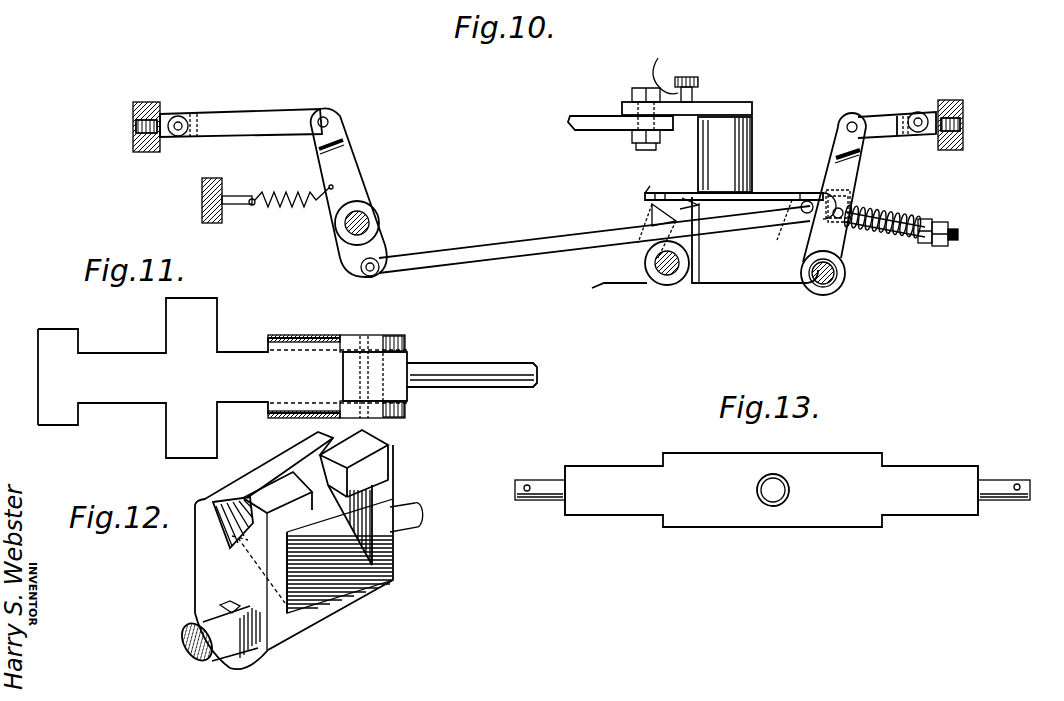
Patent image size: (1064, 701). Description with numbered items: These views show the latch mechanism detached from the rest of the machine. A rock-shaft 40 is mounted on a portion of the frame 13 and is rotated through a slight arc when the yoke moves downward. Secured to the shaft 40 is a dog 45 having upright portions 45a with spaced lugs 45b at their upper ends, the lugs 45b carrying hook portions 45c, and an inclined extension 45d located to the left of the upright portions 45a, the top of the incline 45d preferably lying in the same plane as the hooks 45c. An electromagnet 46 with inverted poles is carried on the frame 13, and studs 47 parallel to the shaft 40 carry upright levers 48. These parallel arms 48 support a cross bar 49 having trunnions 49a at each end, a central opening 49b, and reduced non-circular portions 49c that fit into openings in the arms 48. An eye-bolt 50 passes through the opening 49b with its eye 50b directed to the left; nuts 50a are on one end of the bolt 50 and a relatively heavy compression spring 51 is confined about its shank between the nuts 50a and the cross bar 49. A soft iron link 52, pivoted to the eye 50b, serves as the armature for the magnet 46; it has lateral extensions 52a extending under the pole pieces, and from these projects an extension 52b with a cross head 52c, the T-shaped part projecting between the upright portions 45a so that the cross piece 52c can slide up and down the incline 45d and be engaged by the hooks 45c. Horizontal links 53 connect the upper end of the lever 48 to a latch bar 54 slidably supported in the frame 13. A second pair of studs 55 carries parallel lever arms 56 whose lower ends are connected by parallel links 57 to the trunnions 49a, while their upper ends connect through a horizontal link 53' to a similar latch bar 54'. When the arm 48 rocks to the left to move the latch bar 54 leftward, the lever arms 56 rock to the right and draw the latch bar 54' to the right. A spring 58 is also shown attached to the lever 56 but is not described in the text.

In FIG. 10, the frame 13 is at (592, 288).
In FIG. 10, the rock-shaft 40 is at (667, 270).
In FIG. 12, the rock-shaft 40 is at (188, 642).
In FIG. 10, the dog 45 is at (679, 276).
In FIG. 12, the dog 45 is at (338, 610).
In FIG. 12, the upright portions 45a is at (383, 500).
In FIG. 10, the lugs 45b is at (702, 206).
In FIG. 12, the lugs 45b is at (283, 483).
In FIG. 12, the hook portions 45c is at (228, 505).
In FIG. 10, the inclined extension 45d is at (650, 218).
In FIG. 12, the inclined extension 45d is at (238, 527).
In FIG. 10, the electromagnet 46 is at (742, 140).
In FIG. 10, the studs 47 is at (825, 280).
In FIG. 10, the upright levers 48 is at (853, 165).
In FIG. 10, the cross bar 49 is at (852, 193).
In FIG. 13, the cross bar 49 is at (771, 490).
In FIG. 10, the trunnions 49a is at (853, 208).
In FIG. 13, the trunnions 49a is at (548, 507).
In FIG. 13, the central opening 49b is at (775, 497).
In FIG. 13, the reduced non-circular portions 49c is at (627, 508).
In FIG. 10, the eye-bolt 50 is at (958, 239).
In FIG. 11, the eye-bolt 50 is at (485, 368).
In FIG. 10, the nuts 50a is at (948, 230).
In FIG. 10, the eye 50b is at (870, 249).
In FIG. 11, the eye 50b is at (407, 353).
In FIG. 10, the compression spring 51 is at (913, 227).
In FIG. 10, the link 52 is at (778, 193).
In FIG. 11, the link 52 is at (224, 378).
In FIG. 11, the lateral extensions 52a is at (212, 312).
In FIG. 11, the extension 52b is at (120, 361).
In FIG. 10, the cross head 52c is at (656, 193).
In FIG. 11, the cross head 52c is at (57, 340).
In FIG. 10, the horizontal links 53 is at (897, 110).
In FIG. 10, the horizontal link 53' is at (241, 108).
In FIG. 10, the latch bar 54 is at (957, 107).
In FIG. 10, the latch bar 54' is at (152, 111).
In FIG. 10, the studs 55 is at (370, 222).
In FIG. 10, the lever arms 56 is at (352, 166).
In FIG. 10, the parallel links 57 is at (561, 246).
In FIG. 10, the spring 58 is at (295, 207).